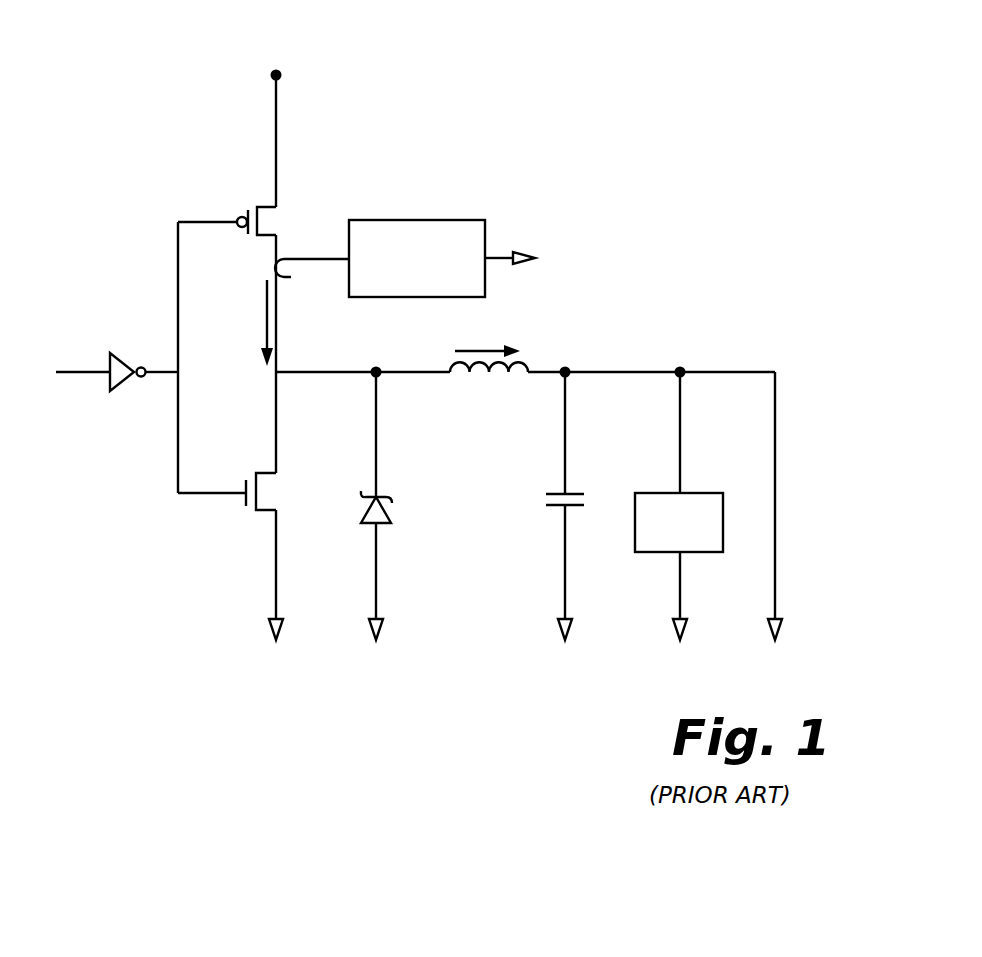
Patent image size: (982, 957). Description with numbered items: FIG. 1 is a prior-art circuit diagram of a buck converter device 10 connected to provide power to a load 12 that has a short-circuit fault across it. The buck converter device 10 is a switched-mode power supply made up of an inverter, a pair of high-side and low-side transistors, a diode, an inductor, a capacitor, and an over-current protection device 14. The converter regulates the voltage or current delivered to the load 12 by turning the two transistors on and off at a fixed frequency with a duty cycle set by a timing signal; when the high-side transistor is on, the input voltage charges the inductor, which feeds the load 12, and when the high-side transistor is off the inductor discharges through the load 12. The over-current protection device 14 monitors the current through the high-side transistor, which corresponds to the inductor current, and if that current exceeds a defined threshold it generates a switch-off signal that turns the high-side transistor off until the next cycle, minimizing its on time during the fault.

The buck converter device 10 is at (150, 117).
The load 12 is at (695, 493).
The over-current protection device 14 is at (418, 220).